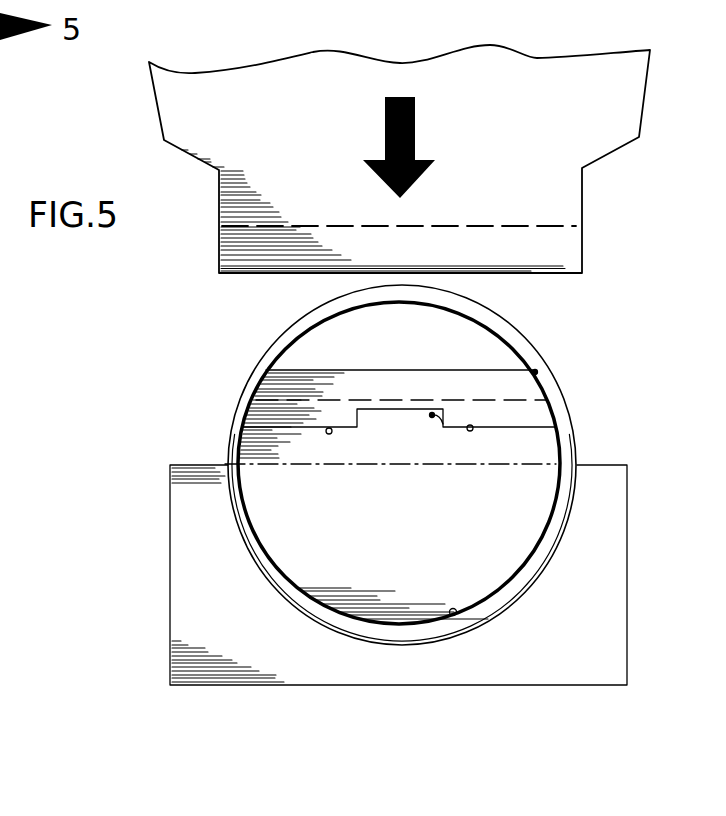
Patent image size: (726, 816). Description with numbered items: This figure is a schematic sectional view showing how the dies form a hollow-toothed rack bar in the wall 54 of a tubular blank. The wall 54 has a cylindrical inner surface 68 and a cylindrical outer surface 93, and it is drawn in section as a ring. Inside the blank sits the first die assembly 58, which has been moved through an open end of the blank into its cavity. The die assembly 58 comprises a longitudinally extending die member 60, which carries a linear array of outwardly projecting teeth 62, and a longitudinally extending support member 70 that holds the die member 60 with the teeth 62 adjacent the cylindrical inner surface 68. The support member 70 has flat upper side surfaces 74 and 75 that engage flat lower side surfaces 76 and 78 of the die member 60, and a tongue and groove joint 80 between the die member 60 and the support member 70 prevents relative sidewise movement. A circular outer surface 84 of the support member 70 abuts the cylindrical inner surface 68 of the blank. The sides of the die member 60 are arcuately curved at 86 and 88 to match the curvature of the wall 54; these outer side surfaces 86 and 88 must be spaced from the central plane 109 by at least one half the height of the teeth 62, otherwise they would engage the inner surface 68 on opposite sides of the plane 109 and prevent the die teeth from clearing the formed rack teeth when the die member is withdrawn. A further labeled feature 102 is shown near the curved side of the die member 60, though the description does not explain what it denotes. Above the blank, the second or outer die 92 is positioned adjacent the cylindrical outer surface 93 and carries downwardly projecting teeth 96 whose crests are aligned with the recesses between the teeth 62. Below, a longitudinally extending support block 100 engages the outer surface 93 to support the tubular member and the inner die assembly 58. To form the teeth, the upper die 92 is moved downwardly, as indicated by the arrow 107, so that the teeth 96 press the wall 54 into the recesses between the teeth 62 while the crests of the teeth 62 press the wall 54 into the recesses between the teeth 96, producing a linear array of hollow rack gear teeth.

The wall 54 is at (510, 338).
The first die assembly 58 is at (580, 440).
The die member 60 is at (548, 400).
The teeth 62 is at (397, 376).
The cylindrical inner surface 68 is at (452, 615).
The support member 70 is at (370, 618).
The flat upper side surface 74 is at (240, 433).
The flat upper side surface 75 is at (560, 412).
The flat lower side surface 76 is at (331, 428).
The flat lower side surface 78 is at (456, 426).
The tongue and groove joint 80 is at (448, 428).
The circular outer surface 84 is at (537, 556).
The arcuately curved side 86 is at (275, 382).
The arcuately curved side 88 is at (533, 372).
The second or outer die 92 is at (541, 50).
The cylindrical outer surface 93 is at (278, 332).
The teeth 96 is at (568, 255).
The support block 100 is at (192, 630).
The slot 102 is at (244, 398).
The arrow 107 is at (417, 120).
The central plane 109 is at (390, 470).